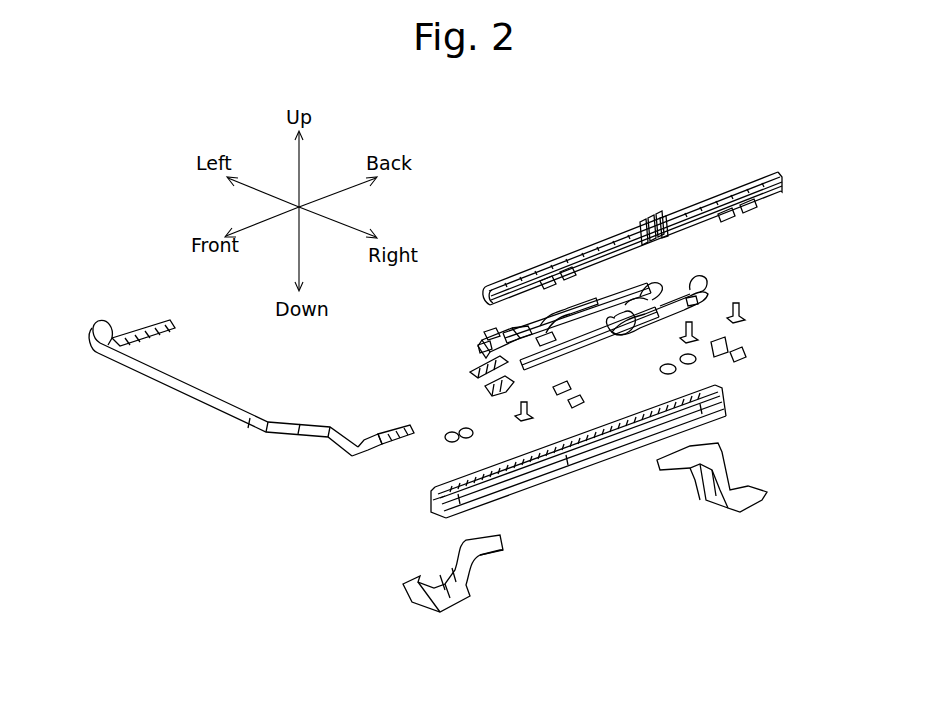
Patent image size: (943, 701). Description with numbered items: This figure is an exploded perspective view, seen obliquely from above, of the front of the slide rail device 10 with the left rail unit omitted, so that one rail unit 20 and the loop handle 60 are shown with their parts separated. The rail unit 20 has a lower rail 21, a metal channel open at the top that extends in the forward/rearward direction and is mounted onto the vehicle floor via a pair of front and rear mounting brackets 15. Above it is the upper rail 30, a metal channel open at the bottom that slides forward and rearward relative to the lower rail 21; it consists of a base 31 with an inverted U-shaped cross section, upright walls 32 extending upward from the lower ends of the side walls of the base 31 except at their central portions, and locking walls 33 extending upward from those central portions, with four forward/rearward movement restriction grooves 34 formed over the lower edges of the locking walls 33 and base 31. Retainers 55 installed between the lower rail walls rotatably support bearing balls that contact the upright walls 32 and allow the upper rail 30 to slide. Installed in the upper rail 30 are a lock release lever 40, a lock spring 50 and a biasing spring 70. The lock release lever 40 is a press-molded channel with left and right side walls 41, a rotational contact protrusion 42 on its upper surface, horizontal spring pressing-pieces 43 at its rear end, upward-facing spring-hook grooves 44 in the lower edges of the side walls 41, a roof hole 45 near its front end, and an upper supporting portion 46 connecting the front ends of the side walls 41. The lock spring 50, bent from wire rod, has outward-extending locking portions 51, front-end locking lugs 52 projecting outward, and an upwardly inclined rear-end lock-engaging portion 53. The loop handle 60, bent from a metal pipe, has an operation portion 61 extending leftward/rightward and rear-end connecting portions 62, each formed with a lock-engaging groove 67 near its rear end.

The slide rail device 10 is at (270, 486).
The mounting bracket 15 is at (416, 585).
The rail unit 20 is at (455, 356).
The lower rail 21 is at (548, 481).
The upper rail 30 is at (581, 246).
The base 31 is at (745, 178).
The upright wall 32 is at (554, 275).
The locking wall 33 is at (661, 217).
The forward/rearward movement restriction groove 34 is at (653, 211).
The lock release lever 40 is at (506, 340).
The side wall 41 is at (492, 358).
The rotational contact protrusion 42 is at (548, 317).
The spring pressing-piece 43 is at (650, 290).
The spring-hook groove 44 is at (545, 341).
The roof hole 45 is at (486, 333).
The upper supporting portion 46 is at (486, 346).
The lock spring 50 is at (700, 293).
The locking portion 51 is at (657, 316).
The front-end locking lug 52 is at (546, 366).
The rear-end lock-engaging portion 53 is at (691, 290).
The retainer 55 is at (580, 402).
The loop handle 60 is at (211, 407).
The operation portion 61 is at (154, 380).
The rear-end connecting portion 62 is at (140, 325).
The lock-engaging groove 67 is at (165, 320).
The biasing spring 70 is at (503, 390).